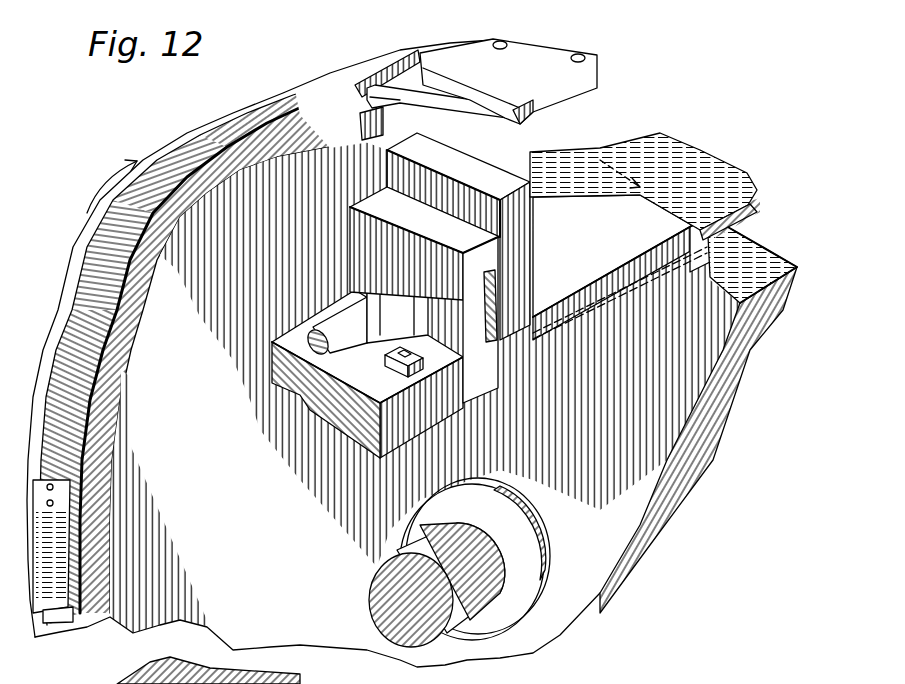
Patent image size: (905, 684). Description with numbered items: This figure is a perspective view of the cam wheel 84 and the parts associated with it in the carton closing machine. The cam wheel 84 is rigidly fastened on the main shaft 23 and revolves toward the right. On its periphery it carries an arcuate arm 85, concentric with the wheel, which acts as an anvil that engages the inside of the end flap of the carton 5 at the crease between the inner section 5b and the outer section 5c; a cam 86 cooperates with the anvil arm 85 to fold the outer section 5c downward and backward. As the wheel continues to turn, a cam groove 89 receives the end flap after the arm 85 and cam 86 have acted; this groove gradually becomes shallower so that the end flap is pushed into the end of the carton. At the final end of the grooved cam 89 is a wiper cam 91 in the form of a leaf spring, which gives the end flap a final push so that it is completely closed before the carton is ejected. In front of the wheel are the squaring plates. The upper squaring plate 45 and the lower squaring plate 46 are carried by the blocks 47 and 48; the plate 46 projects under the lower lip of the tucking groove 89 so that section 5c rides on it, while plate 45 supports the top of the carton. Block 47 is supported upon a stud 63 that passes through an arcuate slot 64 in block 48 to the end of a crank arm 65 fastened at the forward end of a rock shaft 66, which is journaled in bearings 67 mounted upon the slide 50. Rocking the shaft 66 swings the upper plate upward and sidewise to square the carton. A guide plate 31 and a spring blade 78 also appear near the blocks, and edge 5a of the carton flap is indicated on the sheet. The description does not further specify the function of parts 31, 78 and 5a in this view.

The carton 5 is at (643, 186).
The card edge 5a is at (642, 165).
The inner section of end flap 5b is at (690, 193).
The outer section of end flap 5c is at (733, 183).
The main shaft 23 is at (385, 603).
The guide plate 31 is at (500, 372).
The upper squaring plate 45 is at (650, 262).
The lower squaring plate 46 is at (718, 250).
The block 47 is at (520, 222).
The block 48 is at (378, 198).
The slide 50 is at (420, 427).
The stud 63 is at (410, 262).
The arcuate slot 64 is at (388, 250).
The crank arm 65 is at (420, 292).
The rock shaft 66 is at (277, 330).
The bearings 67 is at (367, 300).
The spring blade 78 is at (495, 292).
The cam wheel 84 is at (623, 587).
The arm 85 is at (470, 100).
The cam 86 is at (517, 95).
The cam groove 89 is at (338, 112).
The wiper cam 91 is at (55, 600).